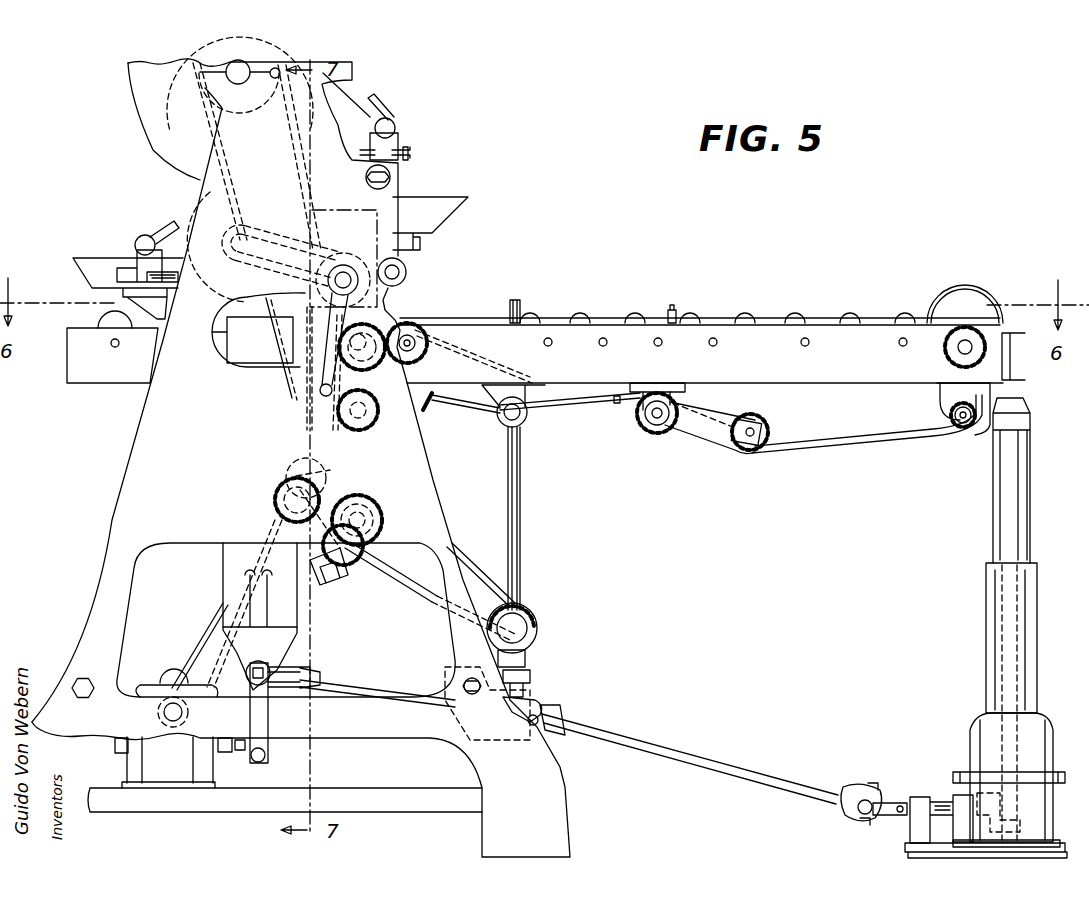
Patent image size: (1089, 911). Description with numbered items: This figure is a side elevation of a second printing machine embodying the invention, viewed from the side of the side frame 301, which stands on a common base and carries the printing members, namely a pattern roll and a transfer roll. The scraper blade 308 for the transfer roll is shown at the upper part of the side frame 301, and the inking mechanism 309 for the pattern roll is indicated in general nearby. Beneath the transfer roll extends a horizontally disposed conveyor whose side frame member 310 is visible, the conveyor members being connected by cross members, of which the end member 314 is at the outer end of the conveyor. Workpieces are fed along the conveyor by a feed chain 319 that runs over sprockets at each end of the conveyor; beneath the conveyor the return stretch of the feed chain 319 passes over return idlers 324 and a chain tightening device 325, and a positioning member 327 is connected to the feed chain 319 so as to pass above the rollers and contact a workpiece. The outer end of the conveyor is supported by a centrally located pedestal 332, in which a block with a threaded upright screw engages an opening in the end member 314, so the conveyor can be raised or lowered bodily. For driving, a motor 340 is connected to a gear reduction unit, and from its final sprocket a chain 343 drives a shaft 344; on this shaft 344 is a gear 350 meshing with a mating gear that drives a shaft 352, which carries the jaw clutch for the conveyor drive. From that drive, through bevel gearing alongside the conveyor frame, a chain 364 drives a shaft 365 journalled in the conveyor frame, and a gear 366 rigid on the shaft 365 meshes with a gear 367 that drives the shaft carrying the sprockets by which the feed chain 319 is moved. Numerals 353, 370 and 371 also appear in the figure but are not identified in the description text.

The side frame 301 is at (118, 499).
The scraper blade 308 is at (178, 230).
The inking mechanism 309 is at (403, 200).
The conveyor side frame member 310 is at (838, 383).
The end member 314 is at (1013, 333).
The feed chain 319 is at (750, 323).
The return idler 324 is at (373, 390).
The chain tightening device 325 is at (697, 430).
The positioning member 327 is at (673, 317).
The pedestal 332 is at (977, 713).
The motor 340 is at (302, 714).
The chain 343 is at (203, 630).
The shaft 344 is at (280, 500).
The gear 350 is at (283, 480).
The shaft 352 is at (382, 510).
The slotted arm 353 is at (290, 383).
The chain 364 is at (440, 417).
The shaft 365 is at (417, 328).
The gear 366 is at (400, 323).
The gear 367 is at (367, 360).
The pulley 370 is at (947, 308).
The lever arm 371 is at (327, 390).